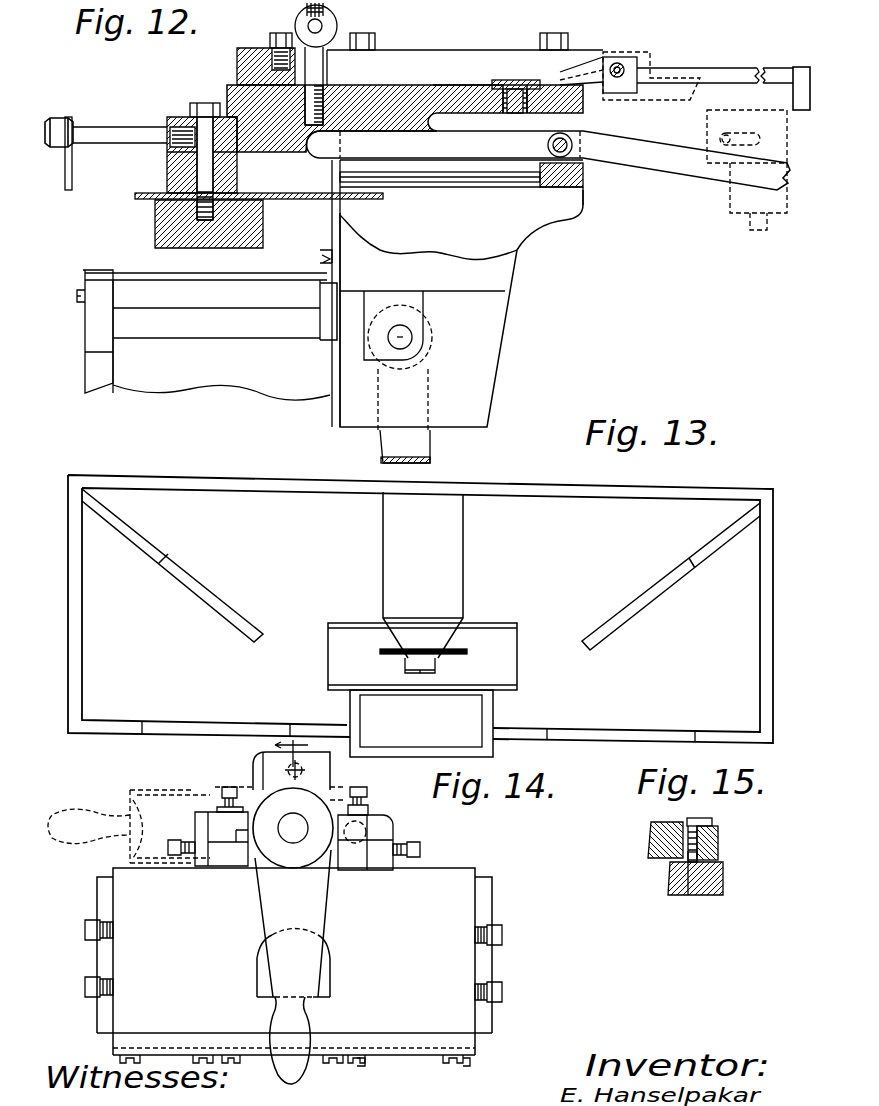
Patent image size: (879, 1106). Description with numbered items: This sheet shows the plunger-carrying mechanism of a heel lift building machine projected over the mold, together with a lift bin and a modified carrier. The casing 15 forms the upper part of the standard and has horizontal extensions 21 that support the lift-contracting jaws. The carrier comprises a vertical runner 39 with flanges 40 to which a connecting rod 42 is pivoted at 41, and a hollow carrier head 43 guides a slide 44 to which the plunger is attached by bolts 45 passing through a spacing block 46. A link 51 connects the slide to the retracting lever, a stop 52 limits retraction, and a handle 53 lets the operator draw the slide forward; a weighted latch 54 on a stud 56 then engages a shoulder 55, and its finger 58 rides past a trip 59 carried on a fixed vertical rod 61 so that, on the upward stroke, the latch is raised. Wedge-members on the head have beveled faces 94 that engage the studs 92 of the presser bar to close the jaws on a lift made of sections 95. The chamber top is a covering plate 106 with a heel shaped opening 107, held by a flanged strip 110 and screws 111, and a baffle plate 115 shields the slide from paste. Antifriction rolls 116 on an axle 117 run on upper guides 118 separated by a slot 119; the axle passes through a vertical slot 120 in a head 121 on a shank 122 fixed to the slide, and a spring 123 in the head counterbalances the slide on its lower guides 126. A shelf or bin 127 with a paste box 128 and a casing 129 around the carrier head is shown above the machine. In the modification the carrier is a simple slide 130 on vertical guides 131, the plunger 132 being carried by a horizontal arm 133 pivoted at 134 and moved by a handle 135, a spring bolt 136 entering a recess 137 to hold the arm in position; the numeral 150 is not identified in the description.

In FIG. 12, the casing 15 is at (153, 382).
In FIG. 14, the casing 15 is at (285, 799).
In FIG. 12, the horizontal extensions 21 is at (273, 302).
In FIG. 12, the runner 39 is at (378, 297).
In FIG. 12, the flanges 40 is at (487, 363).
In FIG. 12, the pivot 41 is at (410, 337).
In FIG. 12, the connecting rod 42 is at (430, 452).
In FIG. 12, the carrier head 43 is at (500, 274).
In FIG. 12, the slide 44 is at (400, 118).
In FIG. 12, the bolts 45 is at (205, 118).
In FIG. 12, the spacing block 46 is at (167, 173).
In FIG. 12, the link 51 is at (660, 163).
In FIG. 12, the stop 52 is at (799, 80).
In FIG. 12, the handle 53 is at (72, 168).
In FIG. 13, the handle 53 is at (385, 650).
In FIG. 12, the weighted latch 54 is at (583, 70).
In FIG. 12, the shoulder 55 is at (157, 236).
In FIG. 12, the stud 56 is at (627, 60).
In FIG. 12, the finger 58 is at (673, 90).
In FIG. 12, the trip 59 is at (698, 137).
In FIG. 12, the vertical rod 61 is at (760, 232).
In FIG. 12, the studs 92 is at (346, 295).
In FIG. 12, the beveled faces 94 is at (331, 258).
In FIG. 12, the sections 95 is at (332, 220).
In FIG. 12, the covering plate 106 is at (215, 276).
In FIG. 13, the covering plate 106 is at (517, 677).
In FIG. 14, the covering plate 106 is at (457, 1018).
In FIG. 13, the heel shaped opening 107 is at (440, 668).
In FIG. 12, the flanged strip 110 is at (95, 270).
In FIG. 14, the flanged strip 110 is at (402, 1045).
In FIG. 12, the screws 111 is at (78, 297).
In FIG. 14, the screws 111 is at (467, 1064).
In FIG. 12, the baffle plate 115 is at (300, 193).
In FIG. 12, the antifriction rolls 116 is at (338, 52).
In FIG. 12, the axle 117 is at (330, 26).
In FIG. 12, the upper guides 118 is at (433, 50).
In FIG. 12, the slot 119 is at (473, 63).
In FIG. 12, the vertical slot 120 is at (300, 22).
In FIG. 12, the head 121 is at (298, 10).
In FIG. 12, the shank 122 is at (324, 78).
In FIG. 12, the spring 123 is at (322, 24).
In FIG. 12, the lower guides 126 is at (470, 173).
In FIG. 13, the shelf or bin 127 is at (420, 609).
In FIG. 13, the paste box 128 is at (421, 723).
In FIG. 13, the casing 129 is at (452, 556).
In FIG. 14, the slide 130 is at (227, 850).
In FIG. 15, the slide 130 is at (725, 880).
In FIG. 14, the vertical guides 131 is at (220, 830).
In FIG. 14, the plunger 132 is at (325, 978).
In FIG. 14, the horizontal arm 133 is at (272, 920).
In FIG. 15, the horizontal arm 133 is at (650, 848).
In FIG. 14, the pivot 134 is at (293, 828).
In FIG. 14, the handle 135 is at (288, 1017).
In FIG. 14, the spring bolt 136 is at (307, 770).
In FIG. 15, the spring bolt 136 is at (720, 851).
In FIG. 14, the recess 137 is at (253, 773).
In FIG. 15, the recess 137 is at (687, 896).
In FIG. 14, the bracket 150 is at (252, 762).